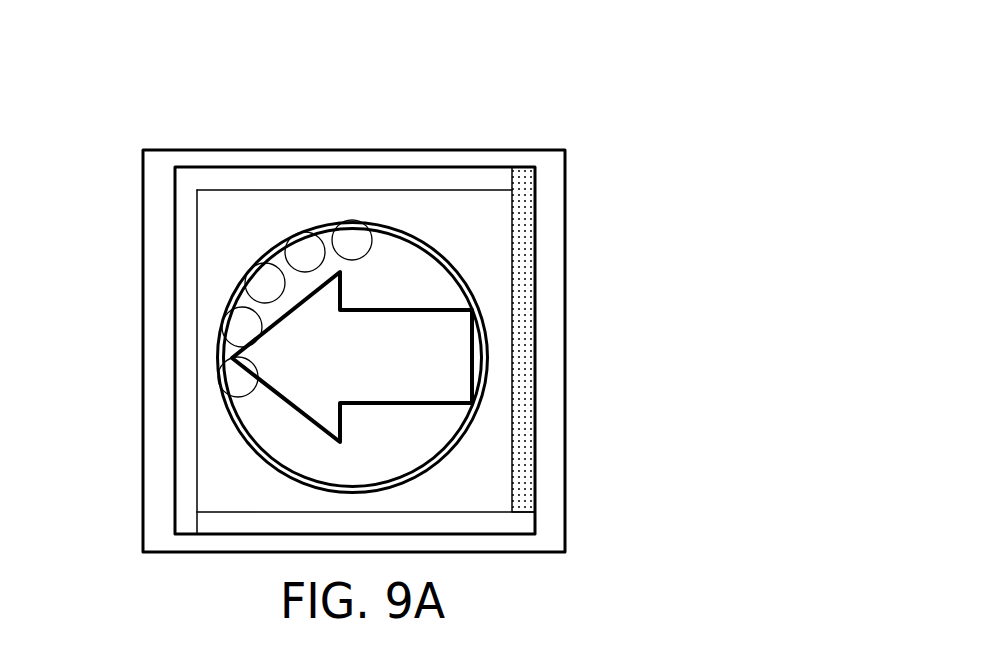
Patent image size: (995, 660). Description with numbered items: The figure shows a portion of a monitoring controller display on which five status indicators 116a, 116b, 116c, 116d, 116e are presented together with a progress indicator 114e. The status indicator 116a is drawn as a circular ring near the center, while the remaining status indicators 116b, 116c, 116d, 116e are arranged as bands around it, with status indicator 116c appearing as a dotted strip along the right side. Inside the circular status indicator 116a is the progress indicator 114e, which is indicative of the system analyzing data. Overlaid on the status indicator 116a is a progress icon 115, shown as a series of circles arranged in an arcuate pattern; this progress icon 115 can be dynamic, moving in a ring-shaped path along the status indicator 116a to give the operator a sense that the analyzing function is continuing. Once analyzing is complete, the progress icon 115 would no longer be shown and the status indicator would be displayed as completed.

The progress indicator 114e is at (308, 387).
The progress icon 115 is at (357, 247).
The status indicator 116a is at (468, 420).
The status indicator 116b is at (482, 520).
The status indicator 116c is at (523, 261).
The status indicator 116d is at (427, 180).
The status indicator 116e is at (183, 284).